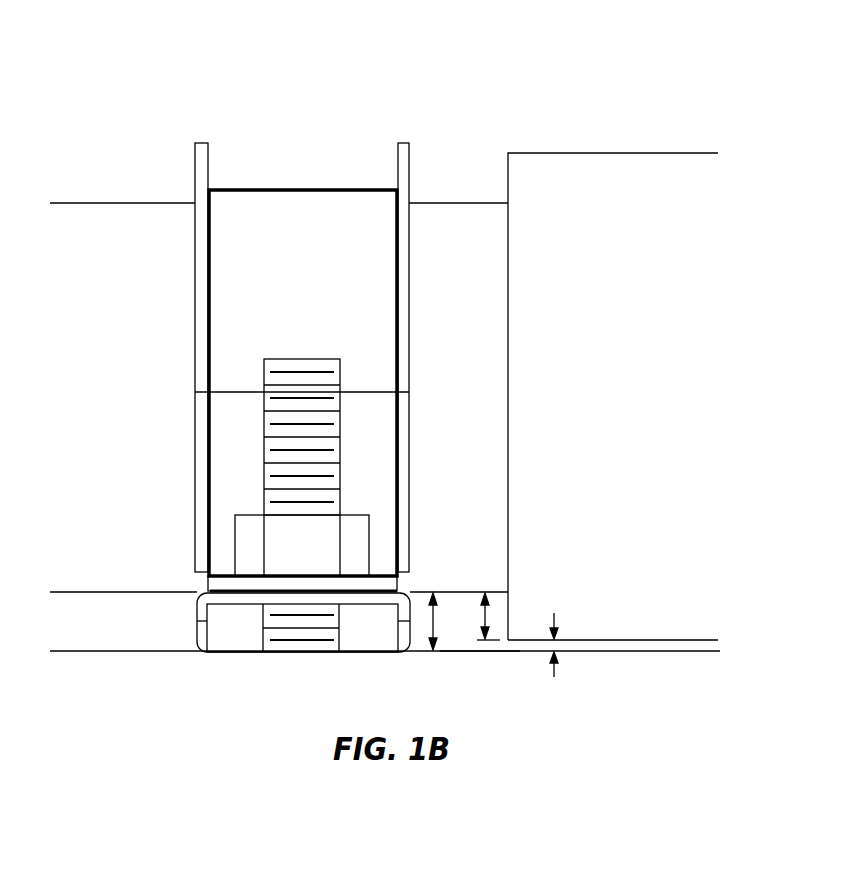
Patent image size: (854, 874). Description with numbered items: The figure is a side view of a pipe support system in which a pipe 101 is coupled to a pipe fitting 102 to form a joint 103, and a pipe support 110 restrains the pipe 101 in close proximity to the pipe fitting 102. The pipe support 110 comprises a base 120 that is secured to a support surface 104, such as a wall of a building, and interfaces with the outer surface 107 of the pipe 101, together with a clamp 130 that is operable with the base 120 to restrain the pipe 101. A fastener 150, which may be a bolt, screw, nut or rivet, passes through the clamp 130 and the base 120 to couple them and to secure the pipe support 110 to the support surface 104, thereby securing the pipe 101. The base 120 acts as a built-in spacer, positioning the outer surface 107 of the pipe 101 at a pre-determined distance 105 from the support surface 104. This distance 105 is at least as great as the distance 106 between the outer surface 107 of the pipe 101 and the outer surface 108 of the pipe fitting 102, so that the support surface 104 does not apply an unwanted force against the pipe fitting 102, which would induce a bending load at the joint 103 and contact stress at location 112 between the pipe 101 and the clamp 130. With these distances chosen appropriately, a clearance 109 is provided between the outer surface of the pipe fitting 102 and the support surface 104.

The pipe 101 is at (124, 203).
The pipe fitting 102 is at (622, 153).
The joint 103 is at (487, 178).
The support surface 104 is at (487, 652).
The pre-determined distance 105 is at (427, 623).
The distance 106 is at (480, 617).
The outer surface of the pipe 107 is at (470, 592).
The outer surface of the pipe fitting 108 is at (606, 641).
The clearance 109 is at (554, 677).
The pipe support 110 is at (315, 324).
The location 112 is at (415, 195).
The base 120 is at (170, 627).
The clamp 130 is at (262, 180).
The fastener 150 is at (263, 482).